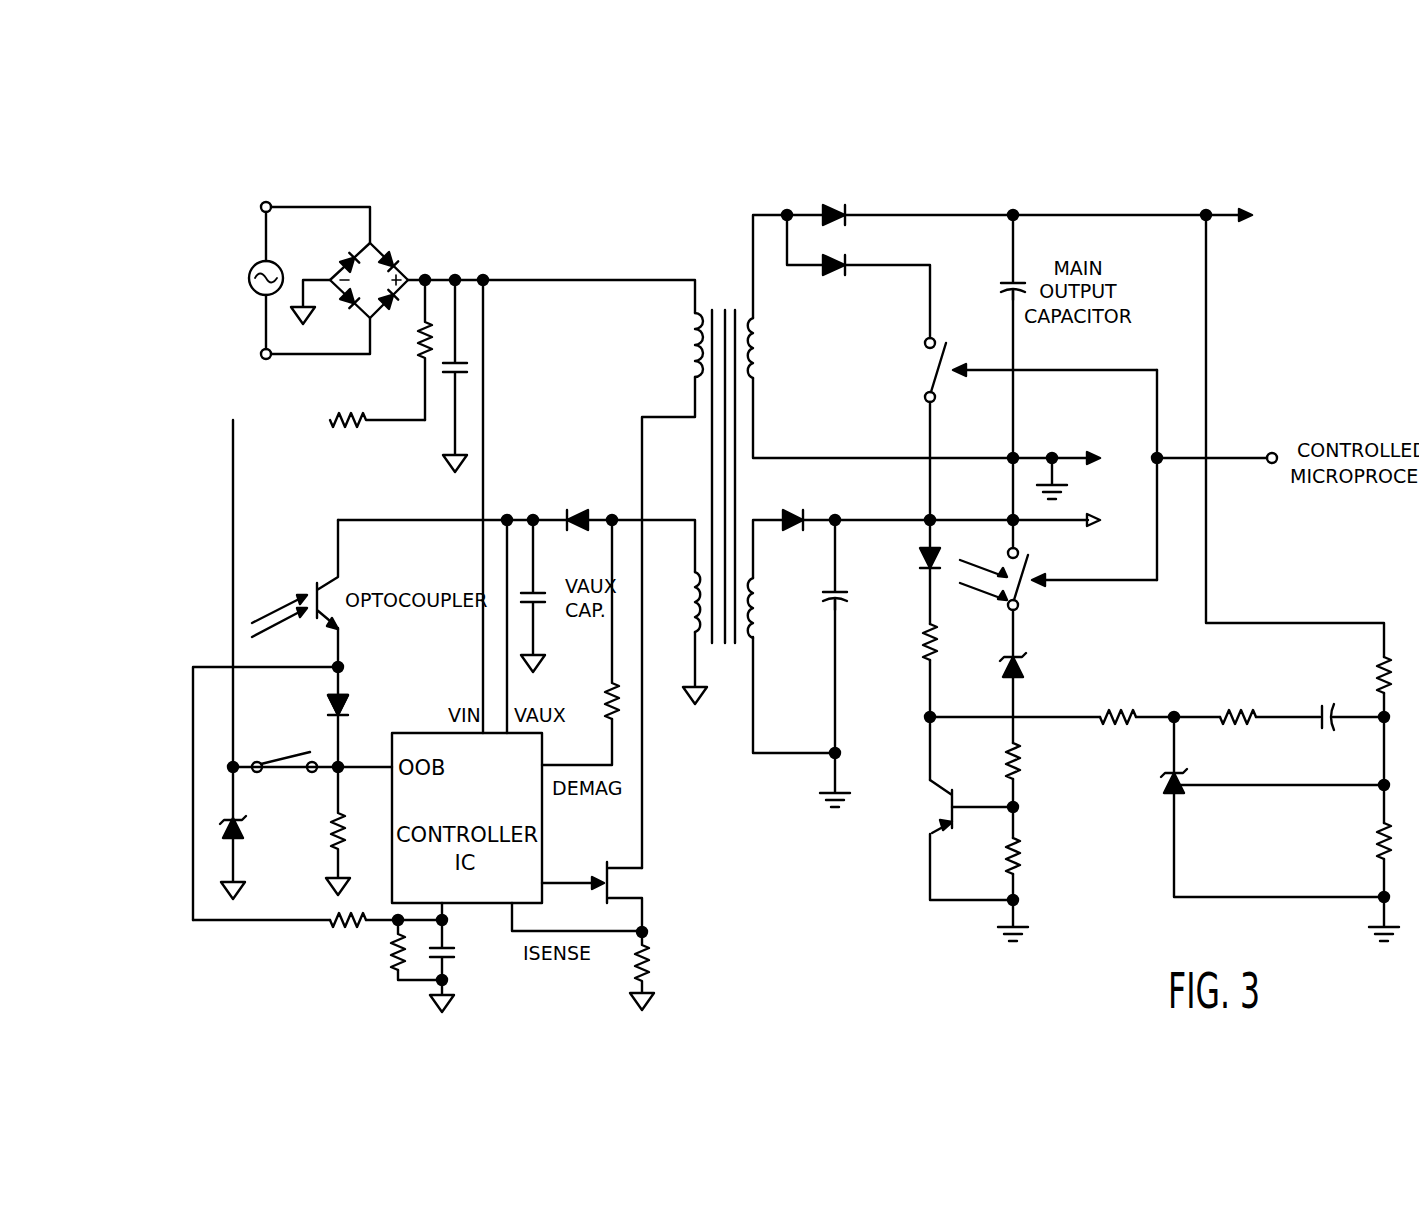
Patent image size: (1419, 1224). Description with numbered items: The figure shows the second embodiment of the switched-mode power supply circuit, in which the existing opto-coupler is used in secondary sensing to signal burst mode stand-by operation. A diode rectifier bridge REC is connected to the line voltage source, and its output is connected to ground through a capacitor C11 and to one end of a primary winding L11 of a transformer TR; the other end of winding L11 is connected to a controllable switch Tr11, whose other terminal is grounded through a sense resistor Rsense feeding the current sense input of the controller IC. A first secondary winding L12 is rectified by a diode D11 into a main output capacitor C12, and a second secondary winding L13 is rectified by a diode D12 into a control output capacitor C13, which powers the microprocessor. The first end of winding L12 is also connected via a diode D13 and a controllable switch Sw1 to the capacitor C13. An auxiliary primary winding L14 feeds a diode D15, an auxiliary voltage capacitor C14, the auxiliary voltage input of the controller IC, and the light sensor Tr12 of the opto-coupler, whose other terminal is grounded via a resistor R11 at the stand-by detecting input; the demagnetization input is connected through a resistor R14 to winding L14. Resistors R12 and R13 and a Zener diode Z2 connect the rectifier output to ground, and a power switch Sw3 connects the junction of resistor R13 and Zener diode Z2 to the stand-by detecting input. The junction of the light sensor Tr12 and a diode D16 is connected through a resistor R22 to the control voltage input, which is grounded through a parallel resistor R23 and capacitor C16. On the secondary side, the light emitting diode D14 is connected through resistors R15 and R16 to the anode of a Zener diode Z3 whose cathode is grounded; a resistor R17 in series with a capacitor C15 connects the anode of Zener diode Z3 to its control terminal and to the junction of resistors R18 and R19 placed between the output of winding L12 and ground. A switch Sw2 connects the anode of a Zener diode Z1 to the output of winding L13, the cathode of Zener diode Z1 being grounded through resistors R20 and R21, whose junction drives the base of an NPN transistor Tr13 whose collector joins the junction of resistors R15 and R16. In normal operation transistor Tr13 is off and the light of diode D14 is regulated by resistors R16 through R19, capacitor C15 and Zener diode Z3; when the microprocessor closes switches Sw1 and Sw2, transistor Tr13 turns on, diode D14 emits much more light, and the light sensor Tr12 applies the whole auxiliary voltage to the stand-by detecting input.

The diode rectifier bridge REC is at (393, 263).
The resistor R11 is at (350, 830).
The resistor R12 is at (415, 345).
The resistor R13 is at (346, 413).
The resistor R14 is at (602, 705).
The resistor R15 is at (923, 643).
The resistor R16 is at (1112, 707).
The resistor R17 is at (1232, 707).
The resistor R18 is at (1375, 672).
The resistor R19 is at (1375, 848).
The resistor R20 is at (1023, 755).
The resistor R21 is at (1025, 855).
The resistor R22 is at (347, 928).
The resistor R23 is at (387, 952).
The sense resistor Rsense is at (681, 971).
The capacitor C11 is at (442, 387).
The main output capacitor C12 is at (998, 287).
The control output capacitor C13 is at (817, 597).
The VAUX capacitor C14 is at (552, 598).
The capacitor C15 is at (1330, 730).
The capacitor C16 is at (460, 953).
The transformer TR is at (723, 300).
The primary winding L11 is at (693, 345).
The first secondary winding L12 is at (753, 337).
The second secondary winding L13 is at (757, 615).
The auxiliary primary winding L14 is at (693, 625).
The diode D11 is at (830, 227).
The diode D12 is at (788, 512).
The diode D13 is at (830, 273).
The light emitting diode D14 is at (918, 557).
The diode D15 is at (583, 512).
The diode D16 is at (325, 707).
The Zener diode Z1 is at (1028, 655).
The Zener diode Z2 is at (247, 830).
The Zener diode Z3 is at (1162, 783).
The controllable switch Sw1 is at (1022, 370).
The controllable switch Sw2 is at (1032, 558).
The power switch Sw3 is at (284, 777).
The controllable switch Tr11 is at (612, 878).
The light sensor Tr12 is at (317, 583).
The NPN transistor Tr13 is at (945, 807).